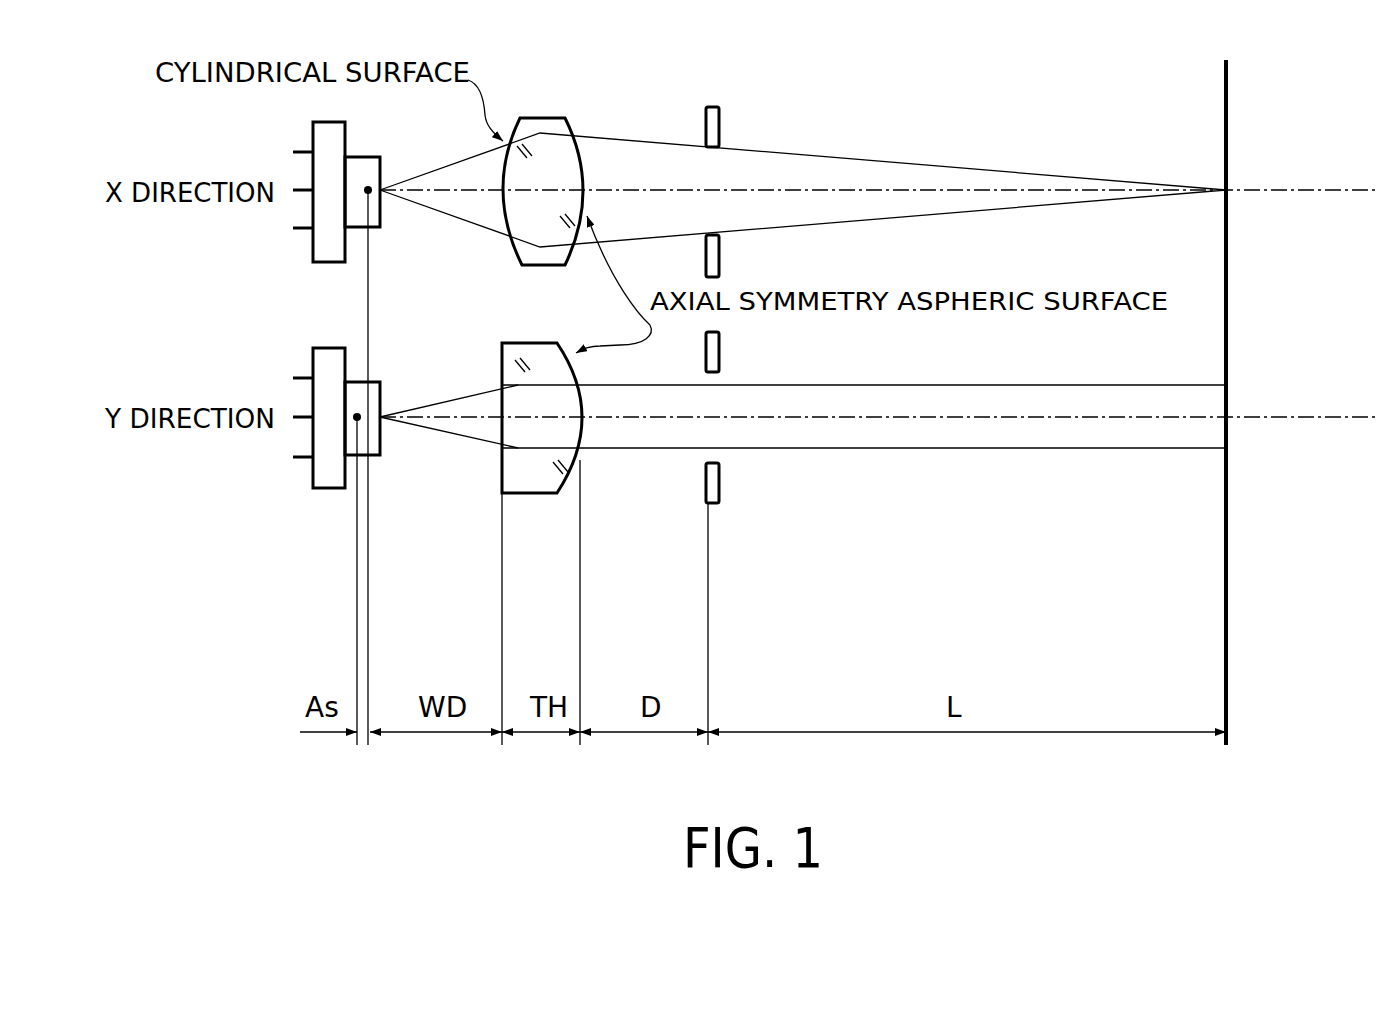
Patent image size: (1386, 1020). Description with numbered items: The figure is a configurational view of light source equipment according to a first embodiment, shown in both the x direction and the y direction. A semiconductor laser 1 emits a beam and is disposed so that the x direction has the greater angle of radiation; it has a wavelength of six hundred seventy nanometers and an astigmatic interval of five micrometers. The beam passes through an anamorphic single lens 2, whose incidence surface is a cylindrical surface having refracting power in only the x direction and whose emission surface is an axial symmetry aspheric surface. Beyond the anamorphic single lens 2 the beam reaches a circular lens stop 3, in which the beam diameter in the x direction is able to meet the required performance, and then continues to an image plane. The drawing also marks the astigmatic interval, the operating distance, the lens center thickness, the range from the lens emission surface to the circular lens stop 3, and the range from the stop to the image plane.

The semiconductor laser 1 is at (328, 488).
The anamorphic single lens 2 is at (500, 482).
The circular lens stop 3 is at (720, 492).